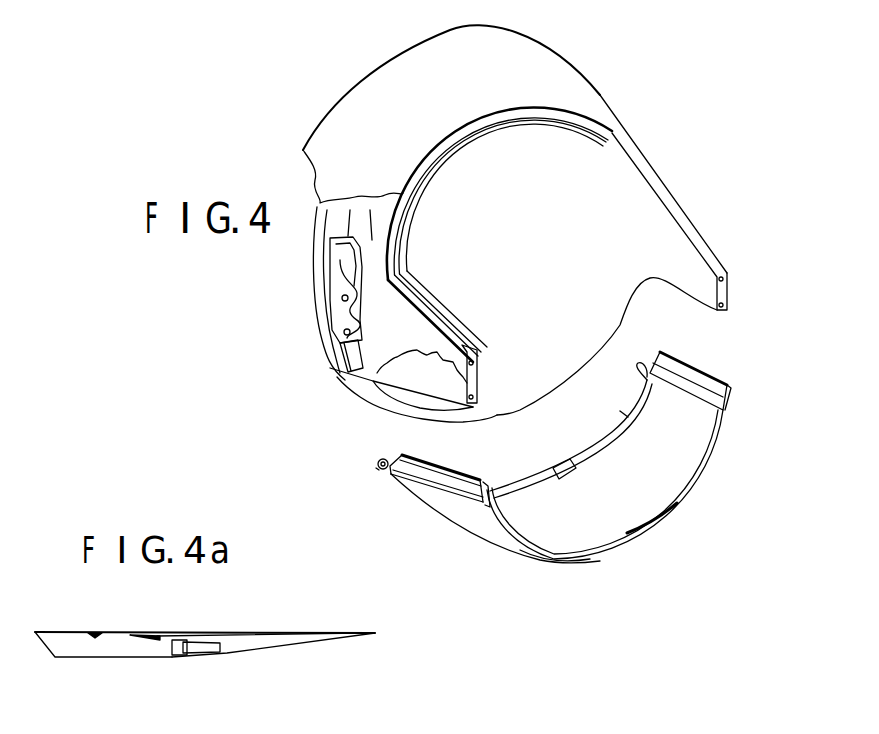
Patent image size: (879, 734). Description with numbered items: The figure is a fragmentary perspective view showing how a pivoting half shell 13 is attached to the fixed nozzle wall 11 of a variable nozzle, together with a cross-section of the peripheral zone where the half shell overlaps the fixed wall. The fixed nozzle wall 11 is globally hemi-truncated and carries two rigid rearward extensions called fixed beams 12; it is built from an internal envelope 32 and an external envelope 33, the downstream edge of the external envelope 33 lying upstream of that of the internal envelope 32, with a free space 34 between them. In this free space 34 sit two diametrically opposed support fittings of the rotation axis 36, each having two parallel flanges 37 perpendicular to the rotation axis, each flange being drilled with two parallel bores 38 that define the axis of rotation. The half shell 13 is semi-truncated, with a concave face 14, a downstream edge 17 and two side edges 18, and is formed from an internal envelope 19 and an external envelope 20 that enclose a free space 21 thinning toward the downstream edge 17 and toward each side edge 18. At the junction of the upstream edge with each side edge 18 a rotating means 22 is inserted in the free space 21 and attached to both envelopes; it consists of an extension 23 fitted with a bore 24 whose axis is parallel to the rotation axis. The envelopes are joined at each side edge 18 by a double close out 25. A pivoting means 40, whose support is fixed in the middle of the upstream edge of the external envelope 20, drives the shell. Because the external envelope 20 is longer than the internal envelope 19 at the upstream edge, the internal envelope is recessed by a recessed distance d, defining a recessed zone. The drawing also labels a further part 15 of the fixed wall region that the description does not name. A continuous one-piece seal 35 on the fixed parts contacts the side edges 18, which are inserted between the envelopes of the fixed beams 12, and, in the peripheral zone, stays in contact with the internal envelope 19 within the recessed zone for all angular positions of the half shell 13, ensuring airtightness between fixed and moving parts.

In FIG. 4, the fixed nozzle wall 11 is at (597, 89).
In FIG. 4, the fixed beams 12 is at (693, 219).
In FIG. 4, the pivoting half shell 13 is at (678, 505).
In FIG. 4a, the concave face 14 is at (95, 633).
In FIG. 4, the outer shell 15 is at (379, 67).
In FIG. 4a, the outer shell 15 is at (220, 653).
In FIG. 4, the downstream edge 17 is at (703, 472).
In FIG. 4, the side edge 18 is at (708, 388).
In FIG. 4, the internal envelope 19 is at (632, 525).
In FIG. 4a, the internal envelope 19 is at (303, 648).
In FIG. 4, the external envelope 20 is at (557, 557).
In FIG. 4a, the external envelope 20 is at (133, 633).
In FIG. 4, the free space 21 is at (626, 412).
In FIG. 4, the rotating means 22 is at (375, 476).
In FIG. 4, the extension 23 is at (394, 453).
In FIG. 4, the bore 24 is at (377, 464).
In FIG. 4, the double close out 25 is at (487, 490).
In FIG. 4, the internal envelope 32 is at (478, 168).
In FIG. 4a, the internal envelope 32 is at (97, 658).
In FIG. 4, the external envelope 33 is at (557, 70).
In FIG. 4a, the external envelope 33 is at (48, 631).
In FIG. 4, the free space 34 is at (613, 128).
In FIG. 4, the seal 35 is at (433, 318).
In FIG. 4a, the seal 35 is at (172, 657).
In FIG. 4, the support fitting of the rotation axis 36 is at (317, 343).
In FIG. 4, the flange 37 is at (345, 347).
In FIG. 4, the bore 38 is at (343, 323).
In FIG. 4, the pivoting means 40 is at (554, 467).
In FIG. 4, the recessed distance d is at (614, 455).